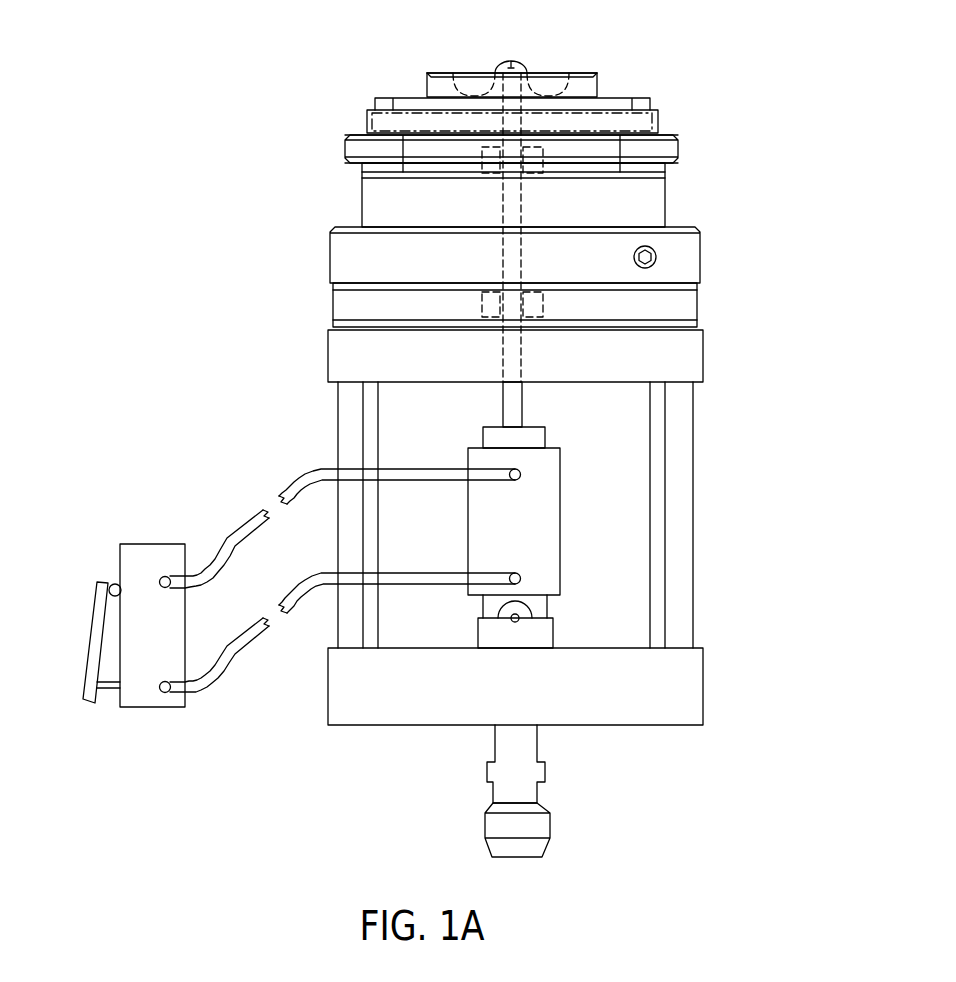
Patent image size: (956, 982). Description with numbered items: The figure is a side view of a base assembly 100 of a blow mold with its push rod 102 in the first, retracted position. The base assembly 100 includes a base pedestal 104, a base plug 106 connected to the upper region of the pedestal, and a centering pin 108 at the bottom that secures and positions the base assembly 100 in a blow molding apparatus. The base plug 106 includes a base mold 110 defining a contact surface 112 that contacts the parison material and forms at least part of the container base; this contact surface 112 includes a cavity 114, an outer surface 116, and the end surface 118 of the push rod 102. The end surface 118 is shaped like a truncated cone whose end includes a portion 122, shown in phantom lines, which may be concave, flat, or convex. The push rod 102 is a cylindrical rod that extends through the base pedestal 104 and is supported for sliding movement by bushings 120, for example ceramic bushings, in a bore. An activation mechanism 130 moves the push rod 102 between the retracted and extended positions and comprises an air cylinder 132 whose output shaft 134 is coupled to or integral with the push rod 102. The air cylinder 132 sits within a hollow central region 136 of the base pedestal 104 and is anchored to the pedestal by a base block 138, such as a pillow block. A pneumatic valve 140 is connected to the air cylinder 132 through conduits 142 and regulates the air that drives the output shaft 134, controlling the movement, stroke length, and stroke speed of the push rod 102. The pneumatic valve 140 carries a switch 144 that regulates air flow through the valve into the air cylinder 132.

The base assembly 100 is at (755, 75).
The push rod 102 is at (512, 197).
The base pedestal 104 is at (695, 356).
The base plug 106 is at (660, 122).
The centering pin 108 is at (535, 830).
The base mold 110 is at (588, 91).
The contact surface 112 is at (547, 83).
The cavity 114 is at (475, 73).
The outer surface 116 is at (589, 72).
The end surface 118 is at (520, 64).
The bushings 120 is at (551, 164).
The portion 122 is at (508, 67).
The activation mechanism 130 is at (575, 514).
The air cylinder 132 is at (548, 548).
The output shaft 134 is at (517, 398).
The hollow central region 136 is at (415, 427).
The base block 138 is at (540, 633).
The pneumatic valve 140 is at (137, 698).
The conduits 142 is at (278, 507).
The switch 144 is at (92, 675).